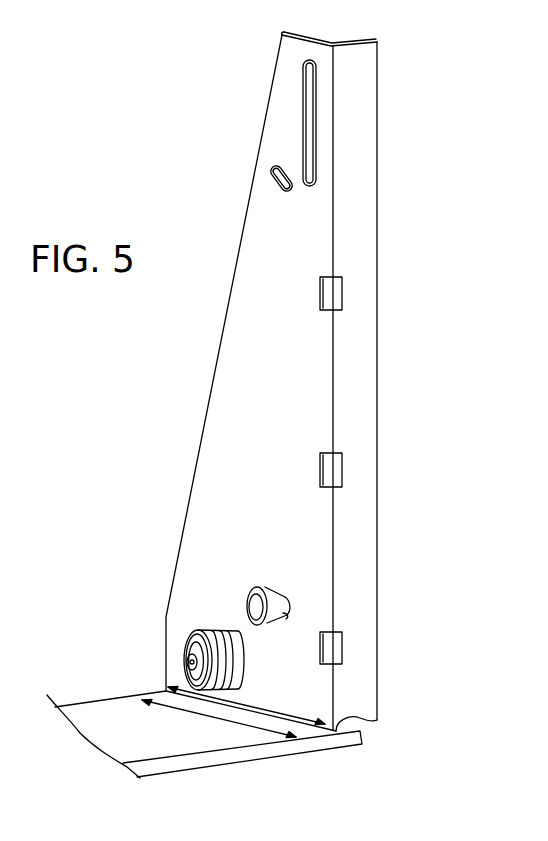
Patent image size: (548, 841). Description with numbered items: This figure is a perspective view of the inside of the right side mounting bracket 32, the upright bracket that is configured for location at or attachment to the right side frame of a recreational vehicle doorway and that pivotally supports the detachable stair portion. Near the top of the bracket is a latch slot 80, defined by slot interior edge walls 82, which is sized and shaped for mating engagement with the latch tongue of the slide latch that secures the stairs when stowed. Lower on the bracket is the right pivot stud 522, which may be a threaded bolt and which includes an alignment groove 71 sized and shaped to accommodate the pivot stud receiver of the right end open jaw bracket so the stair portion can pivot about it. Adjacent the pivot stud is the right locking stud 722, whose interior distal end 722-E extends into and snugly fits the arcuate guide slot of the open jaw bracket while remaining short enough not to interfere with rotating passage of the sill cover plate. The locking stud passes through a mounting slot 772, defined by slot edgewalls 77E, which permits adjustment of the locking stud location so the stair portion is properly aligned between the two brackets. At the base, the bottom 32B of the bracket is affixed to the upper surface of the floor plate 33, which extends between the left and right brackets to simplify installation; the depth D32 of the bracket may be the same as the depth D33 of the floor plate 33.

The right side mounting bracket 32 is at (363, 312).
The latch slot 80 is at (315, 145).
The slot interior edge walls 82 is at (307, 128).
The right locking stud 722 is at (266, 589).
The interior distal end of right locking stud 722-E is at (249, 607).
The mounting slot 772 is at (290, 600).
The slot edgewalls 77E is at (284, 618).
The alignment groove 71 is at (228, 663).
The right pivot stud 522 is at (189, 662).
The bottom of mounting bracket 32B is at (376, 721).
The depth of bracket D32 is at (293, 713).
The depth of floor plate D33 is at (255, 727).
The floor plate 33 is at (150, 750).